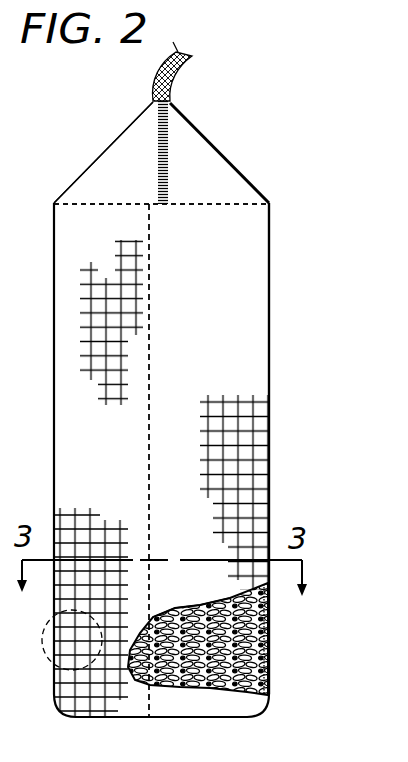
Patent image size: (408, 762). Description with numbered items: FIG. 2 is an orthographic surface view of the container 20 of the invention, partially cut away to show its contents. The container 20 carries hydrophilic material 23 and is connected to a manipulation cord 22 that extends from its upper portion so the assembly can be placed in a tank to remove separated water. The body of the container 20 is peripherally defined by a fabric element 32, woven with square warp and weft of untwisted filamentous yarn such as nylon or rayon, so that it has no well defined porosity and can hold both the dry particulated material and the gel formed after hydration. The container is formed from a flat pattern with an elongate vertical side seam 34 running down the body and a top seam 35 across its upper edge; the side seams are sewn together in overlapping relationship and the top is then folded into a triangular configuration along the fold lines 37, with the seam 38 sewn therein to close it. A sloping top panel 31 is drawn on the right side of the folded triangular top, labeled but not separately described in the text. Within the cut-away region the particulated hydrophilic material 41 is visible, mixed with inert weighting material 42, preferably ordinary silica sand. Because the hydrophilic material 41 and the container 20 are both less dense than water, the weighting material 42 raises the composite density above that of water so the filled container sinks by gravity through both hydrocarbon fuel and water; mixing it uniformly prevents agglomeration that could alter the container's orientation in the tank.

The container 20 is at (50, 335).
The manipulation cord 22 is at (185, 78).
The hydrophilic material 23 is at (178, 612).
The roof panel 31 is at (222, 180).
The fabric element 32 is at (218, 331).
The side seam 34 is at (147, 443).
The top seam 35 is at (143, 202).
The fold line 37 is at (128, 134).
The seam 38 is at (163, 156).
The particulated hydrophilic material 41 is at (271, 641).
The inert weighting material 42 is at (232, 603).